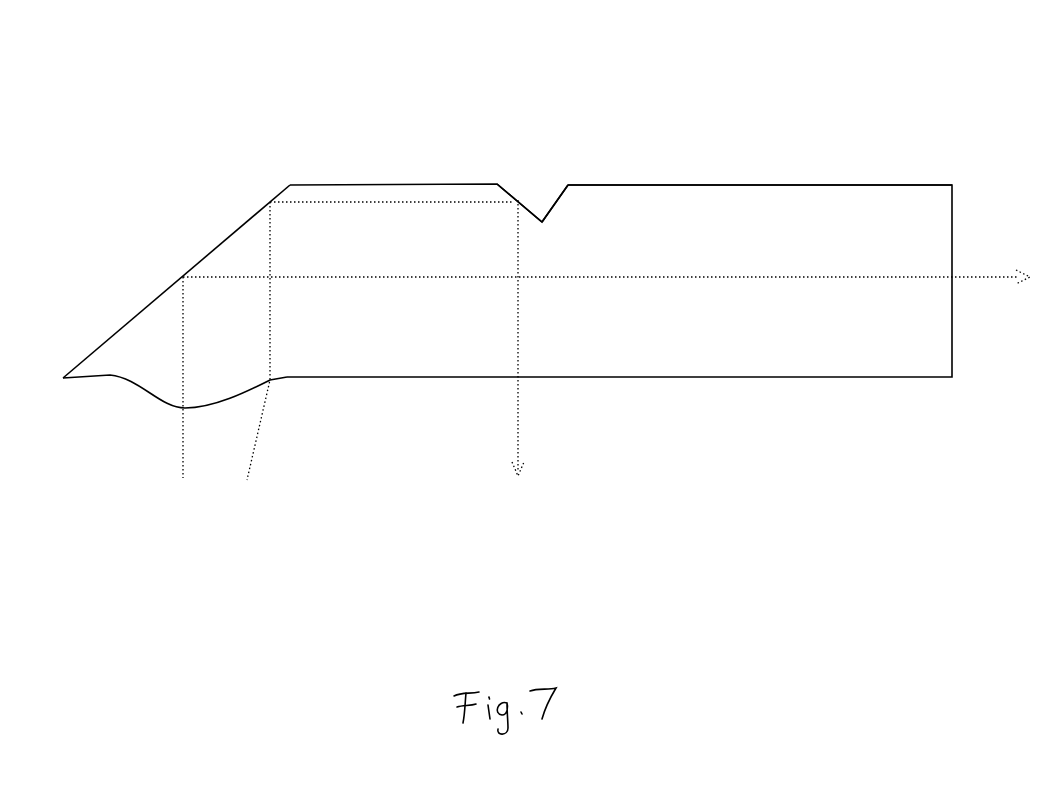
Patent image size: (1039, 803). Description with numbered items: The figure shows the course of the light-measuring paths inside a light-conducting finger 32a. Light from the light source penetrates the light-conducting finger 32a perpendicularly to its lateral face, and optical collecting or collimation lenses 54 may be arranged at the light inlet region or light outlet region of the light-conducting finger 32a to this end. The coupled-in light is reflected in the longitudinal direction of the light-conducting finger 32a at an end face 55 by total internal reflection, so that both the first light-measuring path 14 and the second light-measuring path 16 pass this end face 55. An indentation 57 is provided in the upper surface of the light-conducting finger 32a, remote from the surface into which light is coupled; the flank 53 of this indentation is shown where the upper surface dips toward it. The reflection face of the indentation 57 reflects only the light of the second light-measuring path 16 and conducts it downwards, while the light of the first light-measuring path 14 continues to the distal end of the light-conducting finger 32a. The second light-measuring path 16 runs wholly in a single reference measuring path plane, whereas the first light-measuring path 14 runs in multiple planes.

The first light-measuring path 14 is at (763, 276).
The second light-measuring path 16 is at (518, 405).
The light-conducting finger 32a is at (694, 216).
The notch flank 53 is at (514, 186).
The collecting or collimation lens 54 is at (132, 398).
The end face 55 is at (133, 322).
The indentation 57 is at (545, 178).